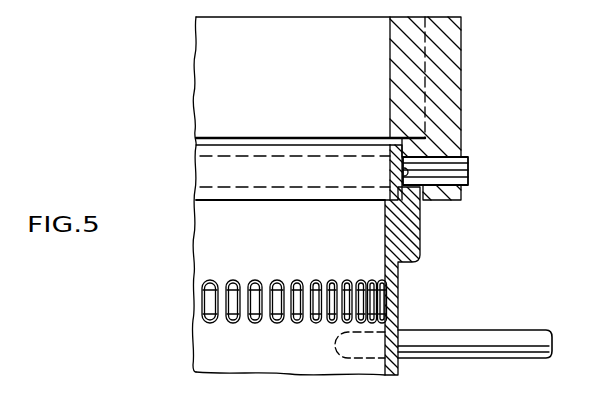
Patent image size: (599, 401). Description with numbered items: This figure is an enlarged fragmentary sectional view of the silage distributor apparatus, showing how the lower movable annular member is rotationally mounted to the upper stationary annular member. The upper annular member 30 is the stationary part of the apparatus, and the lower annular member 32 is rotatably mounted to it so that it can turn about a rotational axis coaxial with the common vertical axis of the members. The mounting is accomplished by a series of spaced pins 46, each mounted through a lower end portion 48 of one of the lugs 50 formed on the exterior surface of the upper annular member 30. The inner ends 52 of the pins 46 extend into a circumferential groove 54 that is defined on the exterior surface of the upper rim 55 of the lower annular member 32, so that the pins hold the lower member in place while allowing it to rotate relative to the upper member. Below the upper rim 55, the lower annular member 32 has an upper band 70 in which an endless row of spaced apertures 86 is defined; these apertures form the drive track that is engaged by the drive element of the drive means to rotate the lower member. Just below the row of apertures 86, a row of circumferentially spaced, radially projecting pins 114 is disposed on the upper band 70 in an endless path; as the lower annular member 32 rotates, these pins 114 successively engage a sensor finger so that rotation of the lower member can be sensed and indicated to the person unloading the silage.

The upper annular member 30 is at (463, 71).
The lower annular member 32 is at (194, 297).
The pins 46 is at (466, 172).
The lower end portions 48 is at (451, 200).
The lugs 50 is at (459, 47).
The inner ends 52 is at (393, 138).
The circumferential groove 54 is at (386, 194).
The upper rim 55 is at (195, 200).
The upper band 70 is at (196, 358).
The apertures 86 is at (314, 325).
The radially-projecting pins 114 is at (503, 330).